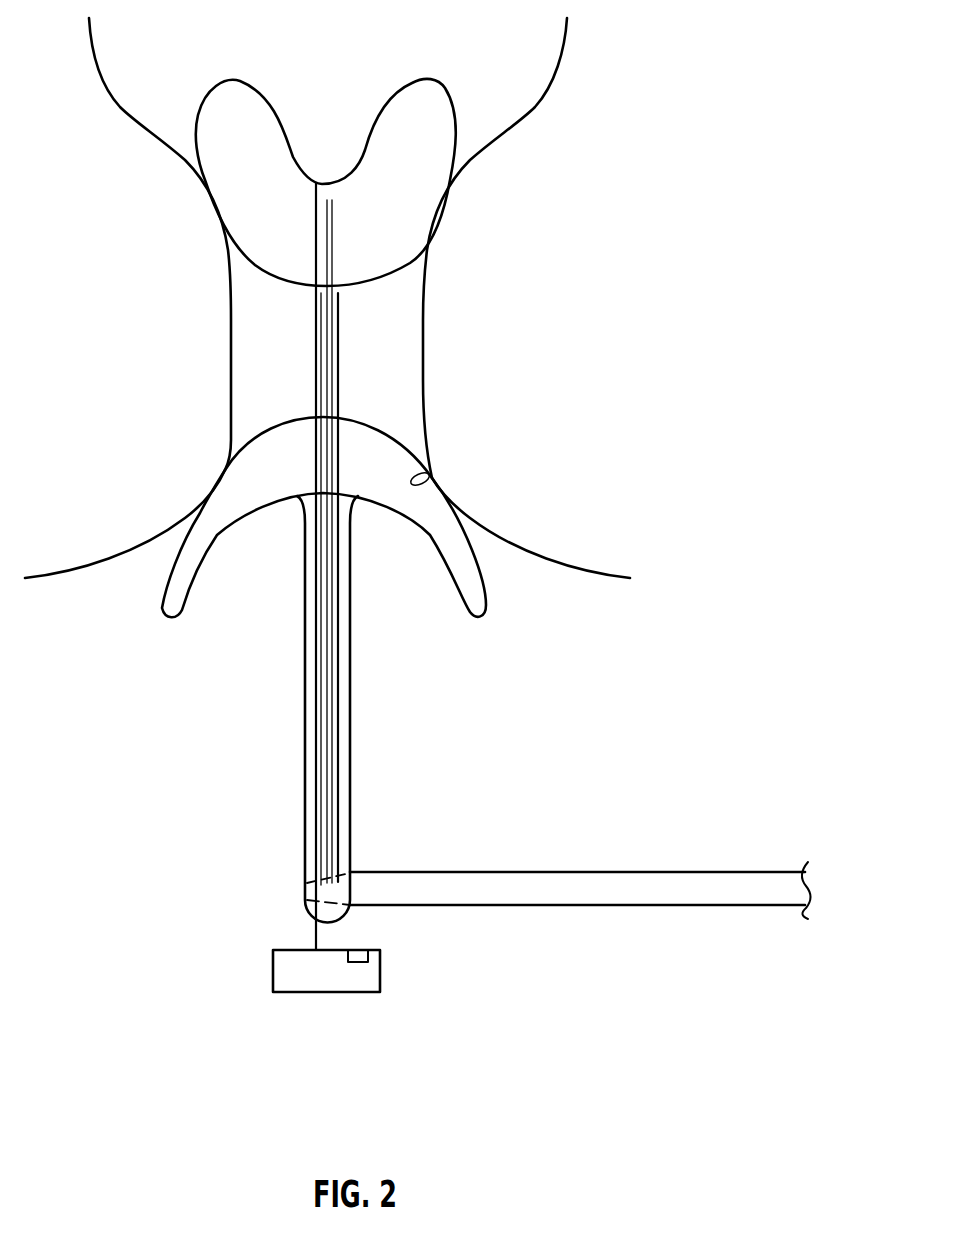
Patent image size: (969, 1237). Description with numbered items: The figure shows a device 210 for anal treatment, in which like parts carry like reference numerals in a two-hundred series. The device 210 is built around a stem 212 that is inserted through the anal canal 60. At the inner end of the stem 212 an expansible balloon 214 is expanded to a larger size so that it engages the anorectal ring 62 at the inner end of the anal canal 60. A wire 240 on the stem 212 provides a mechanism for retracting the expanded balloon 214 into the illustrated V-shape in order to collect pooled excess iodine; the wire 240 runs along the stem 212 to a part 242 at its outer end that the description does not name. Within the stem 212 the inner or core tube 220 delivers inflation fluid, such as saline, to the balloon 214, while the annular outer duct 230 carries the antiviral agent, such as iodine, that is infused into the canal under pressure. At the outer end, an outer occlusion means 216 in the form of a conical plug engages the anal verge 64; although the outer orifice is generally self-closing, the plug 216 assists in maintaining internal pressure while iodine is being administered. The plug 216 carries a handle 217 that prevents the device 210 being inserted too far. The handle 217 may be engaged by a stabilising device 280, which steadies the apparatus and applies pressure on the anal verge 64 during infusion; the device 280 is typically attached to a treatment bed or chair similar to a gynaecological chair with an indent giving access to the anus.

The anal canal 60 is at (392, 347).
The anorectal ring 62 is at (440, 208).
The anal verge 64 is at (429, 475).
The device for anal treatment 210 is at (196, 767).
The stem 212 is at (346, 402).
The expansible balloon 214 is at (403, 173).
The outer occlusion means 216 is at (258, 475).
The handle 217 is at (352, 793).
The inner or core tube 220 is at (329, 669).
The annular outer duct 230 is at (340, 722).
The wire 240 is at (318, 704).
The connector 242 is at (372, 973).
The stabilising device 280 is at (705, 892).